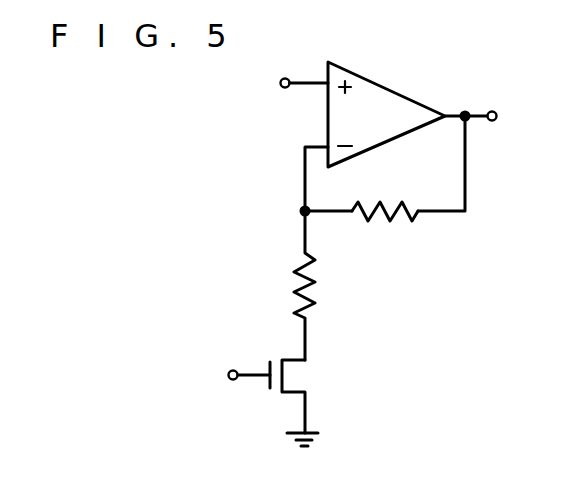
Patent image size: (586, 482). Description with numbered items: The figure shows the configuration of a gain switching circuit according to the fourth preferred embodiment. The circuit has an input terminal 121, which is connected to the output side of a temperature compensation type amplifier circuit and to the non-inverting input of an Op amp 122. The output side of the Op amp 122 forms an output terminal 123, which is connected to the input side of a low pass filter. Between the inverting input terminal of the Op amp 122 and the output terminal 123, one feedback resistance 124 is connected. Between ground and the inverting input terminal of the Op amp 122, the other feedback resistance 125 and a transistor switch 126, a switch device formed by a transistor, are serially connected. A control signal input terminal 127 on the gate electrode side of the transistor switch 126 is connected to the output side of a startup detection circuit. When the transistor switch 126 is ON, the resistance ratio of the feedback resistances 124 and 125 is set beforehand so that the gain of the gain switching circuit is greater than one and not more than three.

The input terminal 121 is at (284, 79).
The Op amp 122 is at (395, 86).
The output terminal 123 is at (497, 112).
The feedback resistance 124 is at (392, 222).
The feedback resistance 125 is at (290, 290).
The transistor switch 126 is at (268, 388).
The control signal input terminal 127 is at (229, 372).